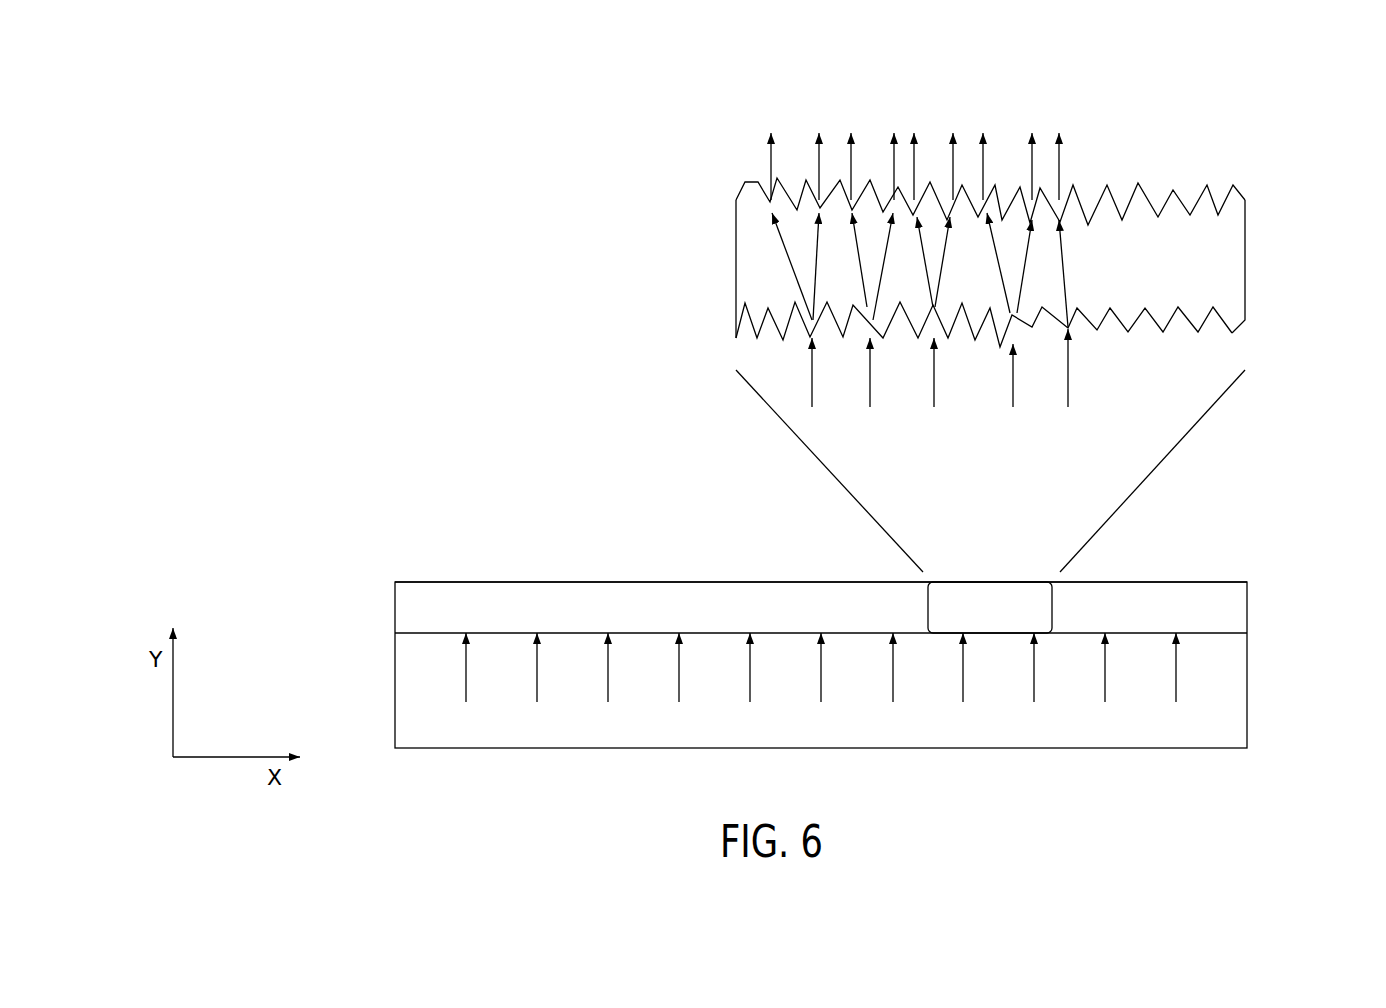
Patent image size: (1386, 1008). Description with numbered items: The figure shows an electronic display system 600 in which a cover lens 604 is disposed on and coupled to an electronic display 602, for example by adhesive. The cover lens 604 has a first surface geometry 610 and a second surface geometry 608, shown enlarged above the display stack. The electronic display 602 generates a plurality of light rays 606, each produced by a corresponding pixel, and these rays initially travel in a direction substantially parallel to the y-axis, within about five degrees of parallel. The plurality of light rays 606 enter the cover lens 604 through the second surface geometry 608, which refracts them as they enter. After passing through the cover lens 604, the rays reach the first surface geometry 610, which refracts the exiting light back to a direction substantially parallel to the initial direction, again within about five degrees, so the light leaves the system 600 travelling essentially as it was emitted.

The electronic display system 600 is at (1323, 140).
The electronic display 602 is at (1247, 687).
The cover lens 604 is at (486, 582).
The plurality of light rays 606 is at (895, 682).
The second surface geometry 608 is at (1218, 328).
The first surface geometry 610 is at (1215, 198).